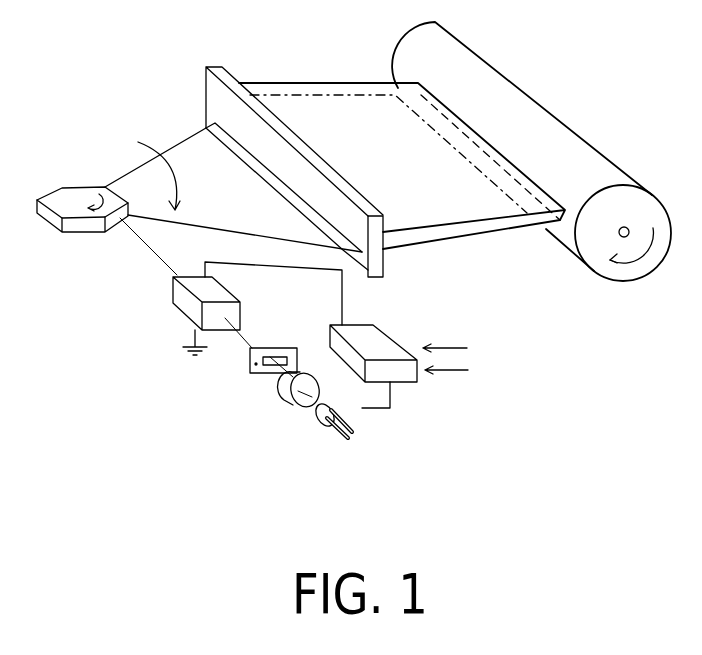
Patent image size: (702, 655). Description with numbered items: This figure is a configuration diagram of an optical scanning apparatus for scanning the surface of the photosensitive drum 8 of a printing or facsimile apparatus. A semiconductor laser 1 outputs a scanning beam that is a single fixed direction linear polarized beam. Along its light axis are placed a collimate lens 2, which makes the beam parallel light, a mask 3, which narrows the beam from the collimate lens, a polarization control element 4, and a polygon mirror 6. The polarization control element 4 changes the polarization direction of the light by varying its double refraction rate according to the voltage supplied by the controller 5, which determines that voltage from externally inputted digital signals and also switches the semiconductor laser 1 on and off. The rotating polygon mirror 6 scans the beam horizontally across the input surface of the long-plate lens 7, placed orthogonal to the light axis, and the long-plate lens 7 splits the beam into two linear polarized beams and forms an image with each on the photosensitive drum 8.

The semiconductor laser 1 is at (318, 428).
The collimate lens 2 is at (282, 392).
The mask 3 is at (243, 365).
The polarization control element 4 is at (180, 302).
The controller 5 is at (375, 332).
The polygon mirror 6 is at (82, 232).
The long-plate lens 7 is at (218, 65).
The photosensitive drum 8 is at (541, 101).